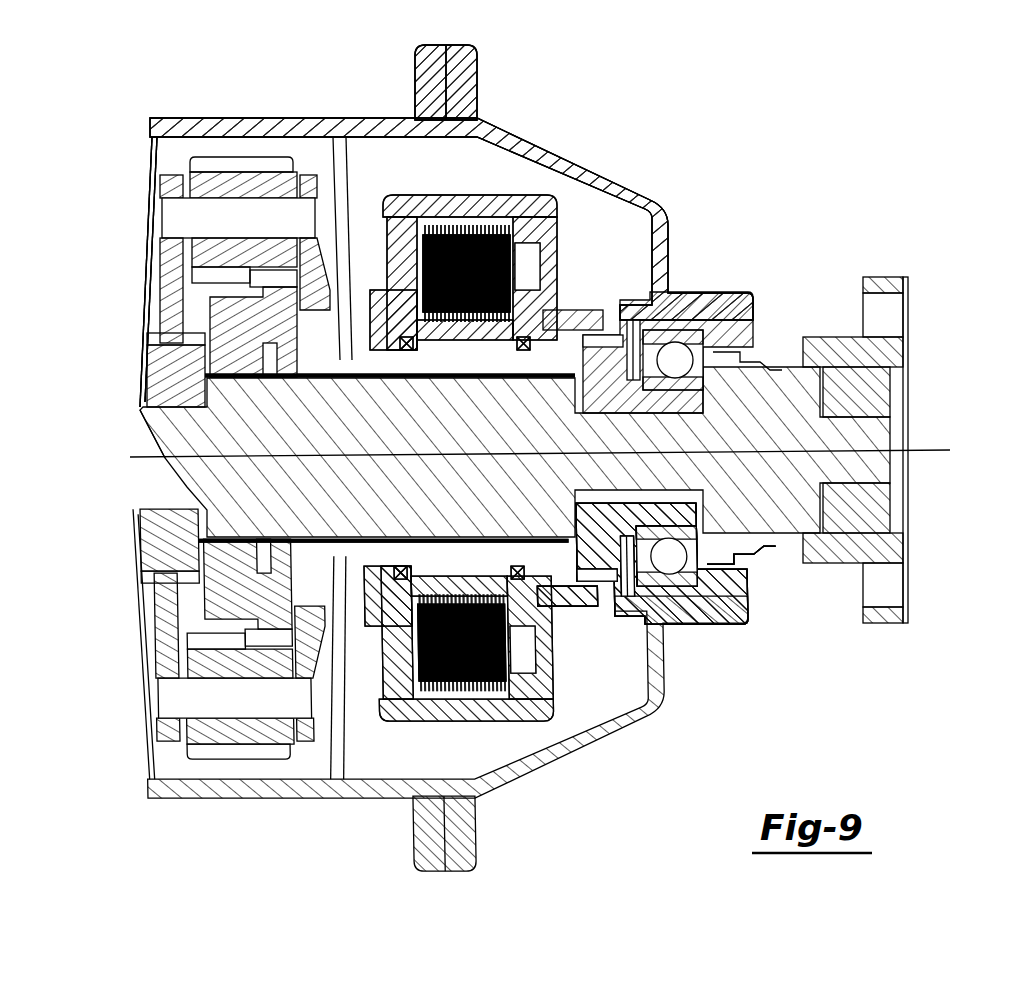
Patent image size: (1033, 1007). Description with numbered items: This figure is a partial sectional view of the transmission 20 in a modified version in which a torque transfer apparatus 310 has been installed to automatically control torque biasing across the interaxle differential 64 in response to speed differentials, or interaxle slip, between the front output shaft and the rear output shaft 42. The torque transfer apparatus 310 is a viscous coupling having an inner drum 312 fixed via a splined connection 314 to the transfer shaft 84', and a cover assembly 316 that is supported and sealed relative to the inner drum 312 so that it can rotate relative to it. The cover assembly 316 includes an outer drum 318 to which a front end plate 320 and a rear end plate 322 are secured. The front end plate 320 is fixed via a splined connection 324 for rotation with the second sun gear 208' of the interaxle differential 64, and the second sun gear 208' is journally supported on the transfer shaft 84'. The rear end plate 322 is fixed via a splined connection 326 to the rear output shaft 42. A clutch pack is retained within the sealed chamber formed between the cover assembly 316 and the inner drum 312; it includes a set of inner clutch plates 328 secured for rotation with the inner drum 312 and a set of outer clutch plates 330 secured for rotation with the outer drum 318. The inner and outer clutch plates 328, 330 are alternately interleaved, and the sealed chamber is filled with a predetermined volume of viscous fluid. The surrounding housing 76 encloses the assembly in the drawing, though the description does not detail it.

The transmission 20 is at (787, 144).
The housing 76 is at (177, 123).
The splined connection 324 is at (350, 345).
The interaxle differential 64 is at (330, 185).
The cover assembly 316 is at (453, 197).
The outer clutch plates 330 is at (480, 232).
The torque transfer apparatus 310 is at (565, 230).
The splined connection 326 is at (610, 305).
The rear output shaft 42 is at (752, 425).
The transfer shaft 84' is at (117, 446).
The second sun gear 208' is at (136, 458).
The inner drum 312 is at (727, 617).
The splined connection 314 is at (650, 602).
The rear end plate 322 is at (605, 682).
The inner clutch plates 328 is at (556, 587).
The outer drum 318 is at (480, 700).
The front end plate 320 is at (400, 648).